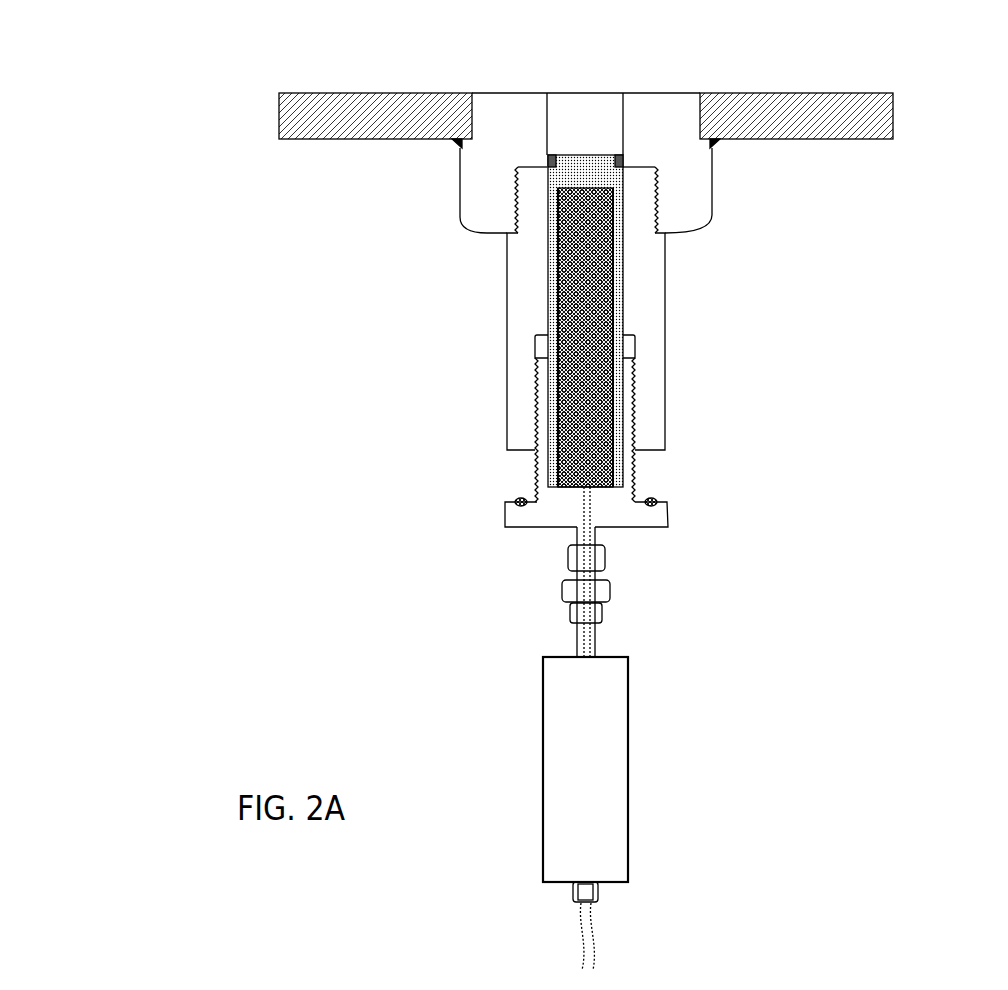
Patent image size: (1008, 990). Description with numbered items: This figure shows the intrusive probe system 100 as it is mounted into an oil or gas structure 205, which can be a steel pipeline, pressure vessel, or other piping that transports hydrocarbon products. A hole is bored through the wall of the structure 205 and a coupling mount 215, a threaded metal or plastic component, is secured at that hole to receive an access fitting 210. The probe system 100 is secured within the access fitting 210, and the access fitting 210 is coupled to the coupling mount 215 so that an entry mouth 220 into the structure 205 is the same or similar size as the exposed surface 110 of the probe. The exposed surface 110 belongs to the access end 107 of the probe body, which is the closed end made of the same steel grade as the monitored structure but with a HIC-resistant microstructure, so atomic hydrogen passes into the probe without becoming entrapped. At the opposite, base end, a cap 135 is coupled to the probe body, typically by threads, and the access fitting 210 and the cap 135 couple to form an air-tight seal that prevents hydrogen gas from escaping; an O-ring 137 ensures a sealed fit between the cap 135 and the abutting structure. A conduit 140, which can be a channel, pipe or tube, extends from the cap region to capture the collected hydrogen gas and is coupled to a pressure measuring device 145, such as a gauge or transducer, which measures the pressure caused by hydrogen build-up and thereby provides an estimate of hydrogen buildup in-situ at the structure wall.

The intrusive probe system 100 is at (208, 484).
The access end 107 is at (570, 167).
The exposed surface 110 is at (585, 153).
The cap 135 is at (667, 525).
The O-ring 137 is at (658, 500).
The conduit 140 is at (585, 500).
The pressure measuring device 145 is at (628, 777).
The structure 205 is at (775, 127).
The access fitting 210 is at (525, 323).
The coupling mount 215 is at (700, 227).
The entry mouth 220 is at (587, 95).